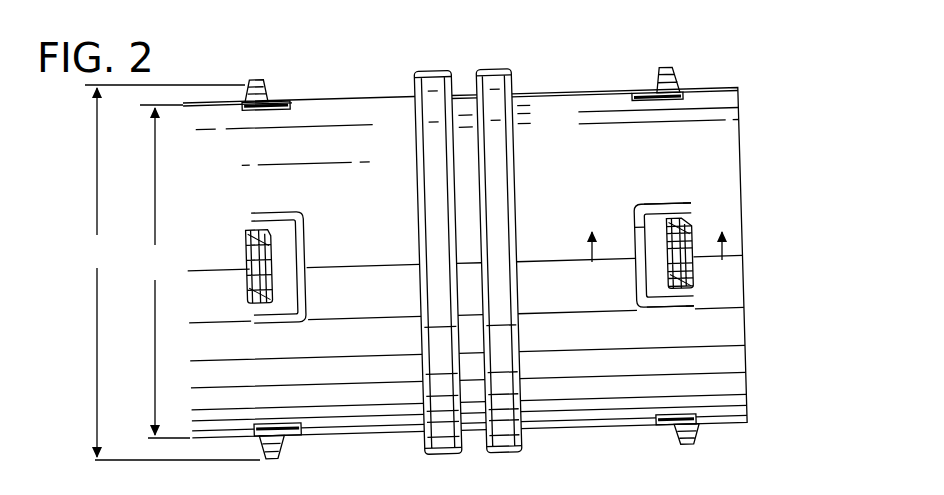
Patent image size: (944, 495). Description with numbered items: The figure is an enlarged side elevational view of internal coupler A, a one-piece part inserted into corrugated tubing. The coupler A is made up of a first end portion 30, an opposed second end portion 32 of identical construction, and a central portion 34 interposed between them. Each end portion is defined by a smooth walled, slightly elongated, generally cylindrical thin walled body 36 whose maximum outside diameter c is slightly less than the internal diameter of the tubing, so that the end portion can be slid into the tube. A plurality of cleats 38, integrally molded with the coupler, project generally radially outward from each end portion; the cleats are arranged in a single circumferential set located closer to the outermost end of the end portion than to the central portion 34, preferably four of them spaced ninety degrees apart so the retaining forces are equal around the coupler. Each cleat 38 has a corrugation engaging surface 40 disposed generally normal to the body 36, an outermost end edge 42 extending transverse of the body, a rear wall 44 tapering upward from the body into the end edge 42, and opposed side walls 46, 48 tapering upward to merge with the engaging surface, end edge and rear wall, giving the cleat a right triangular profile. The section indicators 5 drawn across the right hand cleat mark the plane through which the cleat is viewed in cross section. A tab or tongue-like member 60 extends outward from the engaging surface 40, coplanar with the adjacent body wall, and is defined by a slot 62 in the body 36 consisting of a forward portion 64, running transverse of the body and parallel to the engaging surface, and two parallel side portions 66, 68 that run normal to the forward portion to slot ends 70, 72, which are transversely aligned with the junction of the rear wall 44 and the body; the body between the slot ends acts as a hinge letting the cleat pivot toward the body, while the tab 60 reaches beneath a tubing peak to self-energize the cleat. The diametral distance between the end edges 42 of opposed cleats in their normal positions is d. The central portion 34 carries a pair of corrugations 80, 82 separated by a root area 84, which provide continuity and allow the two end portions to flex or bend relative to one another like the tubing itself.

The first end portion 30 is at (722, 404).
The second end portion 32 is at (322, 126).
The central portion 34 is at (463, 84).
The thin walled body 36 is at (730, 382).
The cleat 38 is at (269, 88).
The corrugation engaging surface 40 is at (662, 268).
The outermost end edge 42 is at (690, 264).
The rear wall 44 is at (688, 272).
The side wall 46 is at (661, 228).
The side wall 48 is at (684, 302).
The section line 5- 5 is at (653, 227).
The tab or tongue-like member 60 is at (631, 301).
The slot 62 is at (655, 288).
The slot forward portion 64 is at (528, 157).
The slot side portion 66 is at (665, 205).
The slot side portion 68 is at (648, 335).
The slot end 70 is at (687, 205).
The slot end 72 is at (702, 335).
The corrugation 80 is at (580, 128).
The corrugation 82 is at (433, 173).
The root area 84 is at (457, 122).
The internal coupler A is at (392, 86).
The maximum outside diameter c is at (163, 274).
The diametral distance d is at (109, 264).